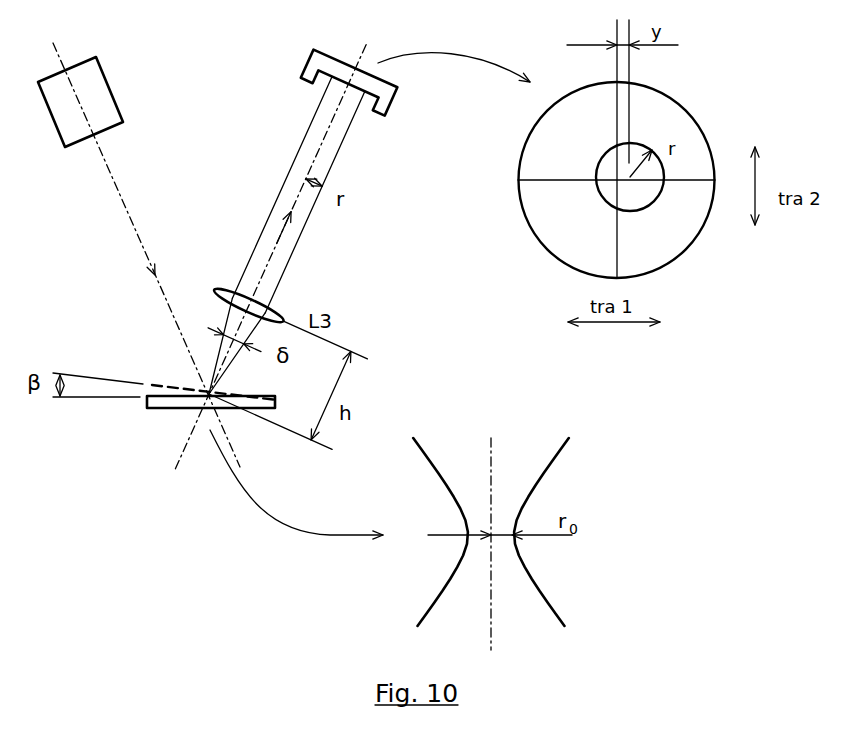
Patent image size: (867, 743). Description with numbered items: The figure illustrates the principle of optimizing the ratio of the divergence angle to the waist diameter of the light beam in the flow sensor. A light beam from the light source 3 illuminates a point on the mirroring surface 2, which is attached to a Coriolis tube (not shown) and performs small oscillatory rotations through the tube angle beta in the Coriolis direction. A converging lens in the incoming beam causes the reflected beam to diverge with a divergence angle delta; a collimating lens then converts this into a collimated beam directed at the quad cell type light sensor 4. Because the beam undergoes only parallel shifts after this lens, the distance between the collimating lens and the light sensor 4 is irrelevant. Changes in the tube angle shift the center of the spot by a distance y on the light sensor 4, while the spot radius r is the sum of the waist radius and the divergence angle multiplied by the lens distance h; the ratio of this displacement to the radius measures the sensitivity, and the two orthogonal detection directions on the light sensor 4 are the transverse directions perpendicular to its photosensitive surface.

The mirroring surface 2 is at (165, 400).
The light source 3 is at (94, 96).
The light sensor 4 is at (322, 62).